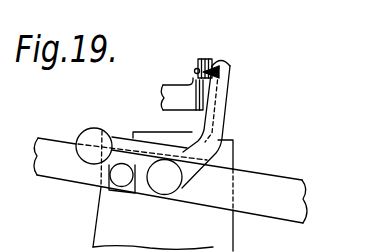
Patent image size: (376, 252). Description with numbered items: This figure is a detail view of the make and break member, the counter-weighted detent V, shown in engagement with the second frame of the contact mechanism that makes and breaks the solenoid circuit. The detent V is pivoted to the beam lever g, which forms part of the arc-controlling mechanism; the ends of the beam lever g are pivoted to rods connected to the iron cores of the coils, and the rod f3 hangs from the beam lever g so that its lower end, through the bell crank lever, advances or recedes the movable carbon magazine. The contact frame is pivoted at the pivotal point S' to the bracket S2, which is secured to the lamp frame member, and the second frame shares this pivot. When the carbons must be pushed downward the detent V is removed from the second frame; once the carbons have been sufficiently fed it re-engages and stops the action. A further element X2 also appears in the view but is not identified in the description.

The beam lever g is at (253, 183).
The counter-weighted detent V is at (223, 106).
The rod f3 is at (129, 191).
The bracket arm X2 is at (203, 58).
The bracket S2 is at (218, 58).
The pivotal point S' is at (233, 68).